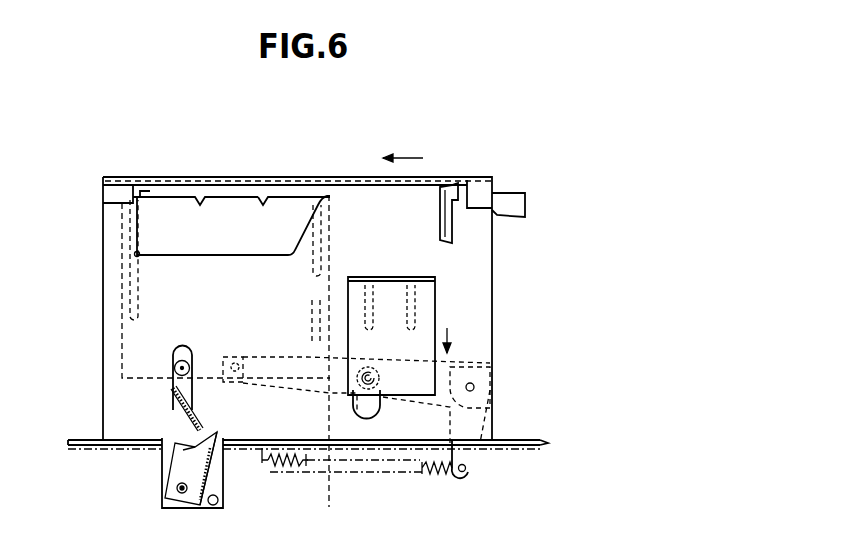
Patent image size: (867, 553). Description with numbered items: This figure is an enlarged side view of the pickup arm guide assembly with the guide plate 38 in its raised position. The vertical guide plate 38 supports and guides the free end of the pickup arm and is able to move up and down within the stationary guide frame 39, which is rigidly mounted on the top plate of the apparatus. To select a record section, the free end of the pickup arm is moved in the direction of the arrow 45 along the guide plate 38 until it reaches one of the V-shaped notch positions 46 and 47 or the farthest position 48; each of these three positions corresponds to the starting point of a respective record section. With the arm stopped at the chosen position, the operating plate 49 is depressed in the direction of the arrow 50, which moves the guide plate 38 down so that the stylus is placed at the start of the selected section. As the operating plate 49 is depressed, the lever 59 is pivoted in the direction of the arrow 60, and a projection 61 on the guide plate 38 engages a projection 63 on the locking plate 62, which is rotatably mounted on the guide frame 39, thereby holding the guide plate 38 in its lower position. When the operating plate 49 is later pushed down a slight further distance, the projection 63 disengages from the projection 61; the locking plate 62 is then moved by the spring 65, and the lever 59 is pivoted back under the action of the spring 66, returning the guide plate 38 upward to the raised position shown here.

The guide plate 38 is at (152, 230).
The guide frame 39 is at (140, 177).
The arrow 45 is at (405, 157).
The V-shaped notch position 46 is at (263, 197).
The V-shaped notch position 47 is at (200, 197).
The farthest position 48 is at (143, 192).
The operating plate 49 is at (430, 313).
The arrow 50 is at (447, 335).
The lever 59 is at (330, 367).
The arrow 60 is at (390, 408).
The projection 61 is at (182, 370).
The locking plate 62 is at (178, 400).
The projection 63 is at (192, 428).
The spring 65 is at (165, 460).
The spring 66 is at (292, 470).